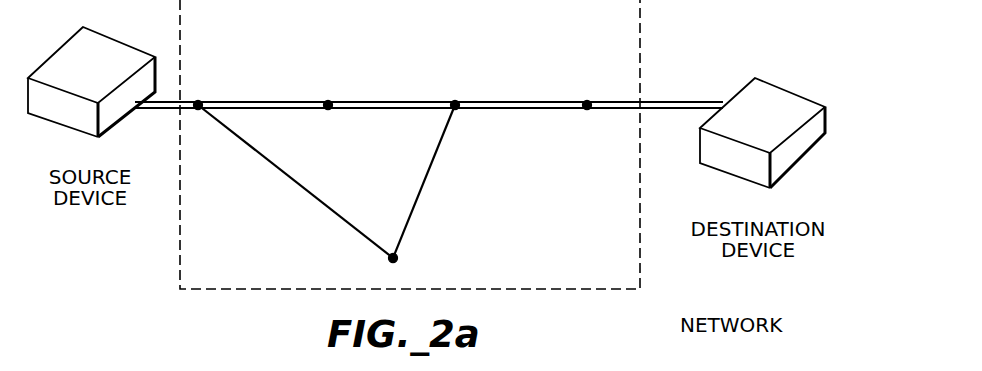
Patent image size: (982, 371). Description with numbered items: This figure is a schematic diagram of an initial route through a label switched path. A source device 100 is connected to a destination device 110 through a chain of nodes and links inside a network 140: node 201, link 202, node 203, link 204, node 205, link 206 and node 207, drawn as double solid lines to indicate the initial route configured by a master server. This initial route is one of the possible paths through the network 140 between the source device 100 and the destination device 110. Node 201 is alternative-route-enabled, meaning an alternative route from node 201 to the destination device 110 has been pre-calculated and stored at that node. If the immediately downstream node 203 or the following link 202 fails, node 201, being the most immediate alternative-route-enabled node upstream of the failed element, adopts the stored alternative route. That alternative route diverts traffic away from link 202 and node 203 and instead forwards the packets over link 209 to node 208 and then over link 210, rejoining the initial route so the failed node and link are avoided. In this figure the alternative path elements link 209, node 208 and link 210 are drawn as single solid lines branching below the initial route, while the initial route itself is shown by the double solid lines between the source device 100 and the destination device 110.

The source device 100 is at (100, 81).
The destination device 110 is at (777, 132).
The network 140 is at (587, 291).
The node 201 is at (198, 101).
The link 202 is at (262, 82).
The node 203 is at (328, 101).
The link 204 is at (395, 82).
The node 205 is at (455, 101).
The link 206 is at (522, 82).
The node 207 is at (587, 101).
The node 208 is at (397, 262).
The link 209 is at (280, 173).
The link 210 is at (435, 163).